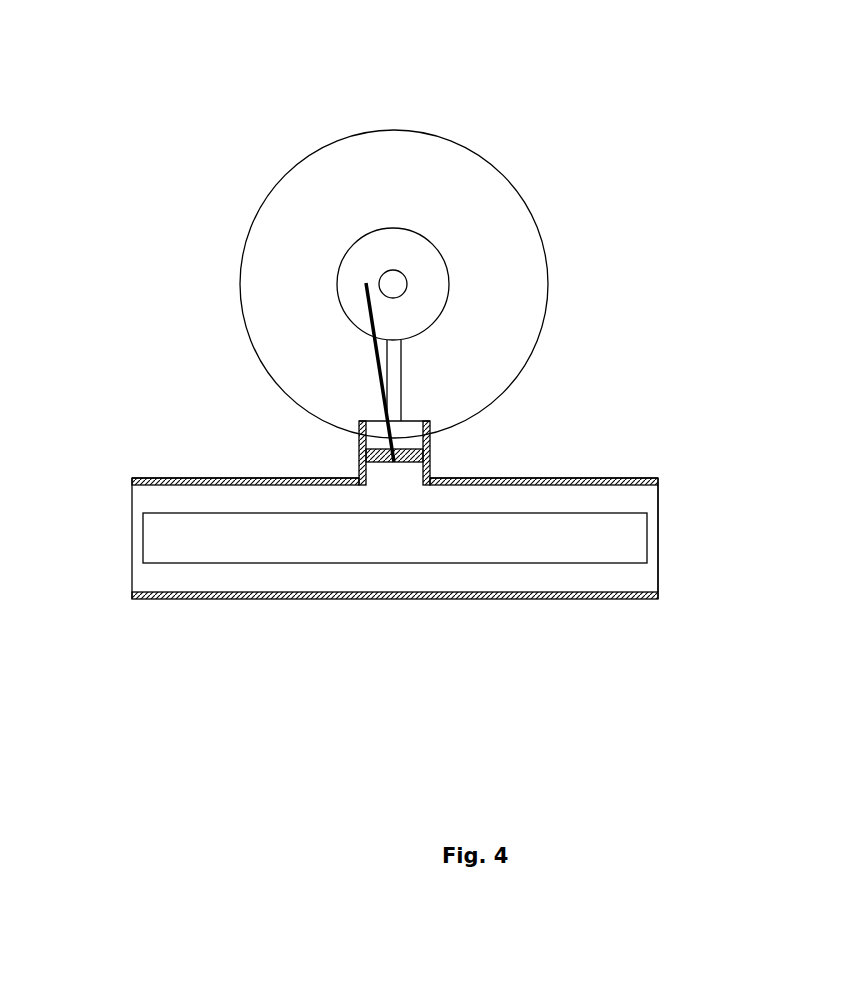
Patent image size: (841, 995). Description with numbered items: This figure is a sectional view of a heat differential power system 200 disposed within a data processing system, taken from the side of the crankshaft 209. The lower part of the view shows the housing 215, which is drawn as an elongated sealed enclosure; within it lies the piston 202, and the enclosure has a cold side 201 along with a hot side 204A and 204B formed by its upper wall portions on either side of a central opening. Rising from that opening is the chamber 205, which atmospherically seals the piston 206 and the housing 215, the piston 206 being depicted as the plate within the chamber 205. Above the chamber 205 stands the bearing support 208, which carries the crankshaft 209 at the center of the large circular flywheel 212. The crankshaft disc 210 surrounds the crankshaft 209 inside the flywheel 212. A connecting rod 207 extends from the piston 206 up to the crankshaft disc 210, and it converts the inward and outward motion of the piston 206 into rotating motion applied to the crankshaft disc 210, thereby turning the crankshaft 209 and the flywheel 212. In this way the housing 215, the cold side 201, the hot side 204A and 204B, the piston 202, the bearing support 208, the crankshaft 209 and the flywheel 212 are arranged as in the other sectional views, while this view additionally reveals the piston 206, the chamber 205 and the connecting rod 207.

The heat differential power system 200 is at (645, 66).
The cold side 201 is at (248, 599).
The piston 202 is at (517, 563).
The hot side 204A is at (628, 477).
The hot side 204B is at (152, 478).
The chamber 205 is at (359, 451).
The piston 206 is at (425, 448).
The connecting rod 207 is at (370, 319).
The bearing support 208 is at (402, 378).
The crankshaft 209 is at (393, 284).
The crankshaft disc 210 is at (380, 234).
The flywheel 212 is at (272, 190).
The housing 215 is at (658, 540).